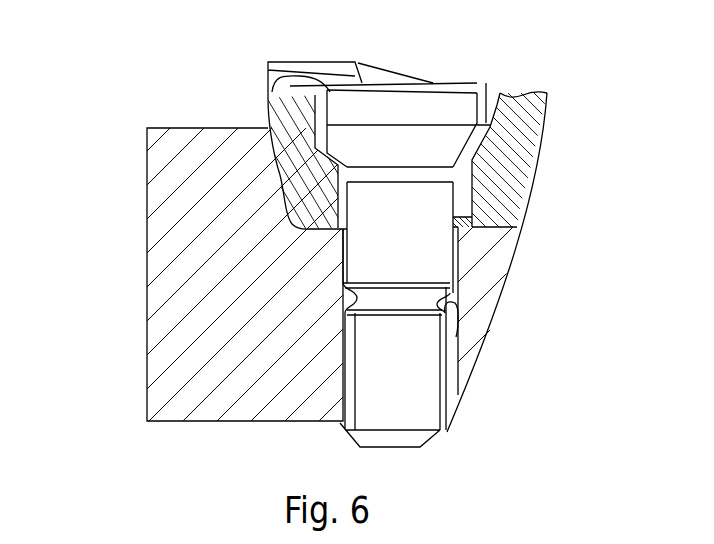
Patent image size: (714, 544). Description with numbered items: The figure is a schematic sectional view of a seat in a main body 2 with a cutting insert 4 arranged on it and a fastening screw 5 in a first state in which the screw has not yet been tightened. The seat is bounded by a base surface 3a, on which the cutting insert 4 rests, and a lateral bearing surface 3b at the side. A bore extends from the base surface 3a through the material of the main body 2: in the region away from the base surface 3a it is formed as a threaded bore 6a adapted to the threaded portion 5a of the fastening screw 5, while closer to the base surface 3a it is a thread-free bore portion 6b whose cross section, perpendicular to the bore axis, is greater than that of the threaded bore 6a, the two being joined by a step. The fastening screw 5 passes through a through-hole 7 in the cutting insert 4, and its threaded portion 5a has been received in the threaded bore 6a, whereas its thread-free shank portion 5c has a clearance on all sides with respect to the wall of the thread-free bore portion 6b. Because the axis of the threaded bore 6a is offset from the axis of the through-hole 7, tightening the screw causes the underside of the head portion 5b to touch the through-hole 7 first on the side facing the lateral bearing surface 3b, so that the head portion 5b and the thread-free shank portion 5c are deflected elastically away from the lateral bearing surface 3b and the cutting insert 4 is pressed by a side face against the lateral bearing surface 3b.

The main body 2 is at (167, 220).
The base surface 3a is at (517, 226).
The lateral bearing surface 3b is at (285, 178).
The cutting insert 4 is at (517, 179).
The fastening screw 5 is at (402, 143).
The threaded portion 5a is at (413, 418).
The head portion 5b is at (458, 120).
The thread-free shank portion 5c is at (433, 248).
The threaded bore 6a is at (412, 392).
The thread-free bore portion 6b is at (447, 320).
The through-hole 7 is at (486, 130).